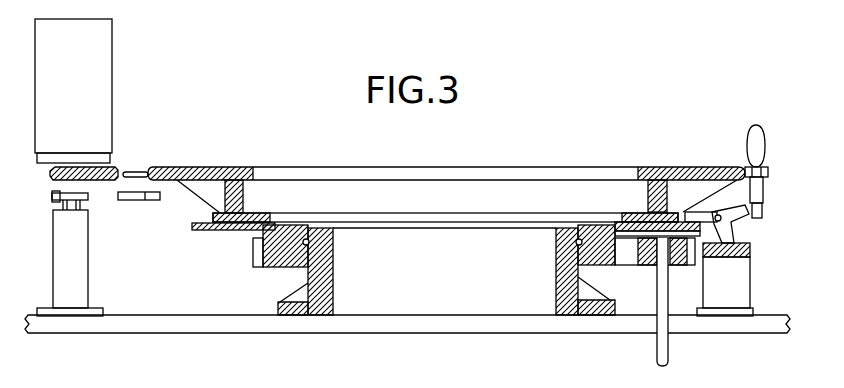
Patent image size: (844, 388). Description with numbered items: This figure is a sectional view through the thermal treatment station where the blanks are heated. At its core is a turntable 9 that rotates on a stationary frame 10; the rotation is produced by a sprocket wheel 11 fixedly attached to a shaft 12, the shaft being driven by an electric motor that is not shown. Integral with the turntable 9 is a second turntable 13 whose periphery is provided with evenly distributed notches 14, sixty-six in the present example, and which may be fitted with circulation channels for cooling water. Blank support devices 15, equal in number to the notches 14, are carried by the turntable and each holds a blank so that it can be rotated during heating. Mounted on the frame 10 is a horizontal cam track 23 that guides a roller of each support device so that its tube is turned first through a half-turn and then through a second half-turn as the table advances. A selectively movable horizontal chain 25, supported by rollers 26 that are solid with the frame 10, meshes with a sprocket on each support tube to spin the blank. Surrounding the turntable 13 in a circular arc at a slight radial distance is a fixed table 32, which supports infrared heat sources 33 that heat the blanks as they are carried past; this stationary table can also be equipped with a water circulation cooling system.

The turntable 9 is at (212, 230).
The frame 10 is at (327, 278).
The sprocket wheel 11 is at (650, 257).
The shaft 12 is at (657, 345).
The turntable 13 is at (200, 167).
The notches 14 is at (130, 172).
The blank support device 15 is at (763, 207).
The cam track 23 is at (732, 265).
The horizontal chain 25 is at (135, 200).
The rollers 26 is at (65, 213).
The fixed table 32 is at (42, 169).
The infrared heat sources 33 is at (73, 91).